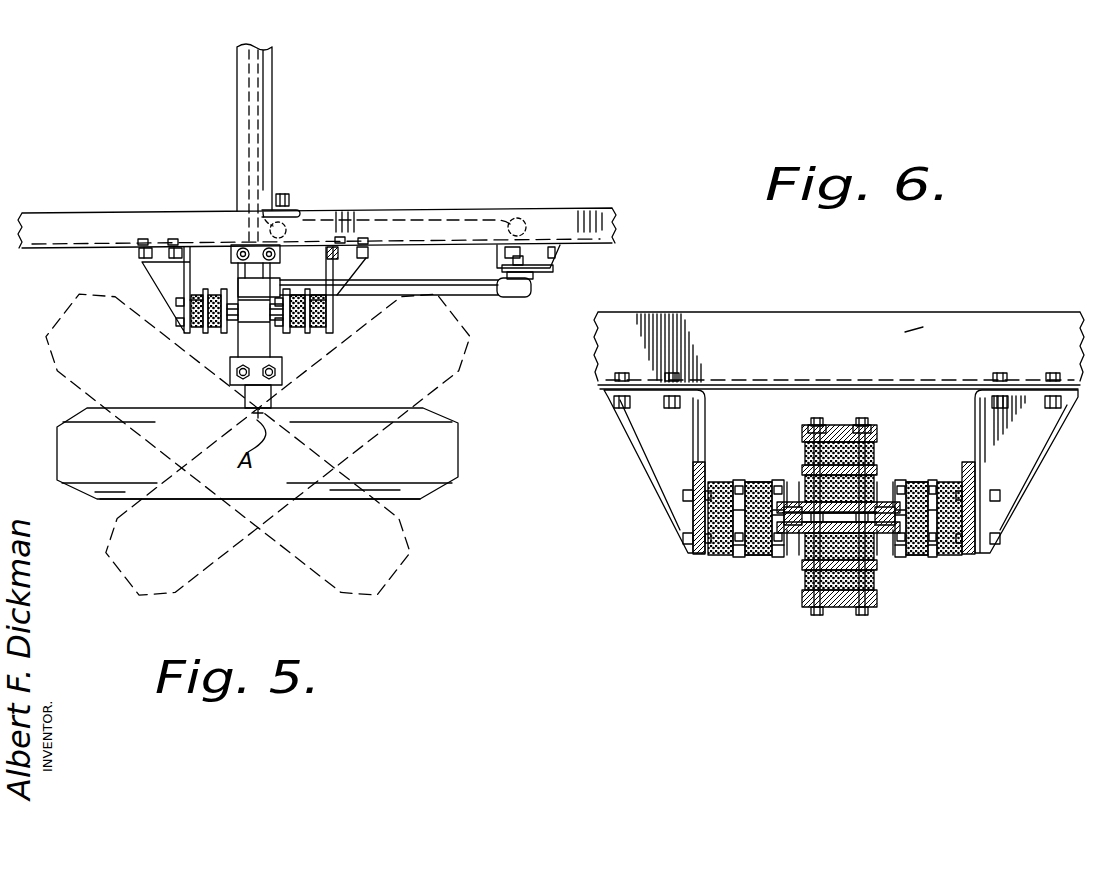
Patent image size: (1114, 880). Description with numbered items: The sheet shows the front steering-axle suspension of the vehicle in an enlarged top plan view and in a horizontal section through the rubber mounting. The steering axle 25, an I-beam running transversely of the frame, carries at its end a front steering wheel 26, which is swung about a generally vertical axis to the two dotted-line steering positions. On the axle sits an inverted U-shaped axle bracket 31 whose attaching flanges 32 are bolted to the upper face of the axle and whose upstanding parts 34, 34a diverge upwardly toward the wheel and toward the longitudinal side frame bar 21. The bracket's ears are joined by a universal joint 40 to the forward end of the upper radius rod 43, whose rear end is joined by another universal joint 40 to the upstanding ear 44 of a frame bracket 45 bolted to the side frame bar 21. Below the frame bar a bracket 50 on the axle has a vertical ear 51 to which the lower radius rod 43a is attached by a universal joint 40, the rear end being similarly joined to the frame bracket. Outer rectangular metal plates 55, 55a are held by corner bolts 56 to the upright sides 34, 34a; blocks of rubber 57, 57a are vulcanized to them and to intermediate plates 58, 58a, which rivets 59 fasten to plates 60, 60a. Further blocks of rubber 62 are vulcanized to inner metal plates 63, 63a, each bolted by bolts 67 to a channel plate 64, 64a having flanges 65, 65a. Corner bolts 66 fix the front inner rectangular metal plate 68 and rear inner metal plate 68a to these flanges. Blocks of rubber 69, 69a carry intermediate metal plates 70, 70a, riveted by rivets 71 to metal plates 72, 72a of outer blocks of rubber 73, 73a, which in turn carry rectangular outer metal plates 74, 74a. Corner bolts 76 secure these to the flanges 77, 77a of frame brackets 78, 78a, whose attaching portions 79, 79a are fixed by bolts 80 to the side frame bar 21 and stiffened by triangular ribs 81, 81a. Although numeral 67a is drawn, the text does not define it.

In FIG. 5, the longitudinal side frame bar 21 is at (42, 218).
In FIG. 6, the longitudinal side frame bar 21 is at (940, 313).
In FIG. 5, the steering axle 25 is at (272, 64).
In FIG. 5, the front steering wheel 26 is at (72, 325).
In FIG. 5, the axle bracket 31 is at (233, 339).
In FIG. 5, the attaching flange 32 is at (243, 412).
In FIG. 6, the upstanding part 34 is at (838, 612).
In FIG. 6, the upstanding part 34a is at (862, 418).
In FIG. 5, the universal joint 40 is at (292, 228).
In FIG. 5, the upper radius rod 43 is at (450, 297).
In FIG. 5, the lower radius rod 43a is at (455, 197).
In FIG. 5, the upstanding ear 44 is at (554, 270).
In FIG. 5, the frame bracket 45 is at (535, 242).
In FIG. 5, the bracket 50 is at (262, 192).
In FIG. 5, the vertical ear 51 is at (300, 212).
In FIG. 6, the outer rectangular metal plate 55 is at (830, 612).
In FIG. 6, the outer rectangular metal plate 55a is at (880, 470).
In FIG. 6, the corner bolt 56 is at (858, 468).
In FIG. 6, the block of rubber 57 is at (845, 610).
In FIG. 6, the block of rubber 57a is at (820, 440).
In FIG. 6, the intermediate plate 58 is at (855, 612).
In FIG. 6, the intermediate plate 58a is at (812, 425).
In FIG. 6, the rivet 59 is at (818, 425).
In FIG. 6, the rectangular metal plate 60 is at (805, 562).
In FIG. 6, the rectangular metal plate 60a is at (898, 502).
In FIG. 6, the block of rubber 62 is at (882, 562).
In FIG. 6, the inner metal plate 63 is at (890, 528).
In FIG. 6, the inner metal plate 63a is at (786, 505).
In FIG. 6, the channel plate 64 is at (905, 537).
In FIG. 6, the channel plate 64a is at (900, 510).
In FIG. 6, the flange 65 is at (745, 557).
In FIG. 6, the flange 65a is at (780, 498).
In FIG. 6, the corner bolt 66 is at (778, 557).
In FIG. 6, the bolt 67 is at (890, 505).
In FIG. 6, the connector 67a is at (802, 470).
In FIG. 6, the front inner rectangular metal plate 68 is at (762, 557).
In FIG. 6, the rear inner metal plate 68a is at (928, 557).
In FIG. 5, the block of rubber 69 is at (217, 327).
In FIG. 6, the block of rubber 69 is at (777, 482).
In FIG. 5, the block of rubber 69a is at (292, 327).
In FIG. 6, the block of rubber 69a is at (905, 485).
In FIG. 6, the intermediate metal plate 70 is at (775, 500).
In FIG. 6, the intermediate metal plate 70a is at (910, 510).
In FIG. 6, the rivet 71 is at (736, 492).
In FIG. 6, the metal plate 72 is at (772, 520).
In FIG. 6, the metal plate 72a is at (915, 530).
In FIG. 5, the outer block of rubber 73 is at (192, 300).
In FIG. 6, the outer block of rubber 73 is at (740, 488).
In FIG. 5, the outer block of rubber 73a is at (325, 332).
In FIG. 6, the outer block of rubber 73a is at (950, 556).
In FIG. 6, the rectangular outer metal plate 74 is at (722, 556).
In FIG. 6, the rectangular outer metal plate 74a is at (960, 557).
In FIG. 6, the corner bolt 76 is at (684, 497).
In FIG. 6, the flange 77 is at (693, 468).
In FIG. 6, the flange 77a is at (975, 470).
In FIG. 5, the frame bracket 78 is at (140, 266).
In FIG. 6, the frame bracket 78 is at (633, 463).
In FIG. 5, the frame bracket 78a is at (367, 264).
In FIG. 6, the frame bracket 78a is at (1036, 468).
In FIG. 5, the attaching portion 79 is at (160, 248).
In FIG. 6, the attaching portion 79 is at (613, 393).
In FIG. 6, the attaching portion 79a is at (1053, 398).
In FIG. 6, the bolt 80 is at (655, 405).
In FIG. 6, the triangular rib 81 is at (642, 446).
In FIG. 6, the triangular rib 81a is at (1038, 448).